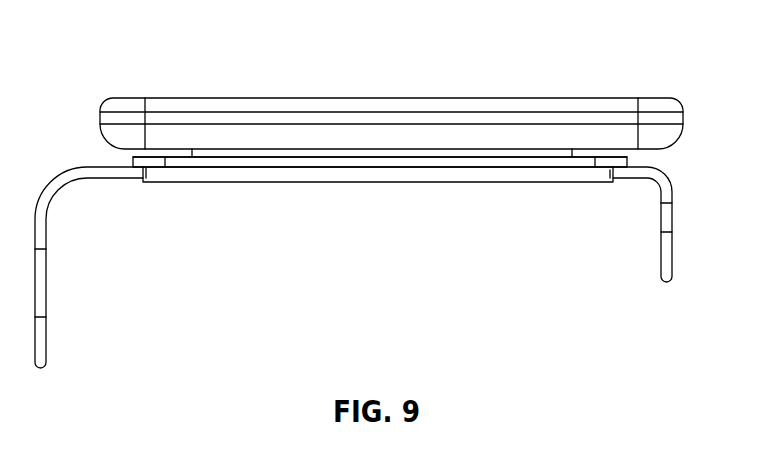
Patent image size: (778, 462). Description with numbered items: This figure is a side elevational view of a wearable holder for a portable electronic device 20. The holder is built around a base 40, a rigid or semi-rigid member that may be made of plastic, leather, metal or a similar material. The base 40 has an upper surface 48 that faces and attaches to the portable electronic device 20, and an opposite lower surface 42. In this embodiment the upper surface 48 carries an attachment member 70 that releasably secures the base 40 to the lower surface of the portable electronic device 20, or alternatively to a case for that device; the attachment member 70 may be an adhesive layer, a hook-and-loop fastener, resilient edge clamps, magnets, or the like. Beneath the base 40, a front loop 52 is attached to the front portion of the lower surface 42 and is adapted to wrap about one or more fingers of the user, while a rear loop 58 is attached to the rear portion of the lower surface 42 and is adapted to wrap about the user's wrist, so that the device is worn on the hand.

The portable electronic device 20 is at (418, 120).
The attachment member 70 is at (507, 153).
The upper surface 48 is at (178, 156).
The base 40 is at (456, 161).
The lower surface 42 is at (223, 182).
The rear loop 58 is at (42, 270).
The front loop 52 is at (667, 219).